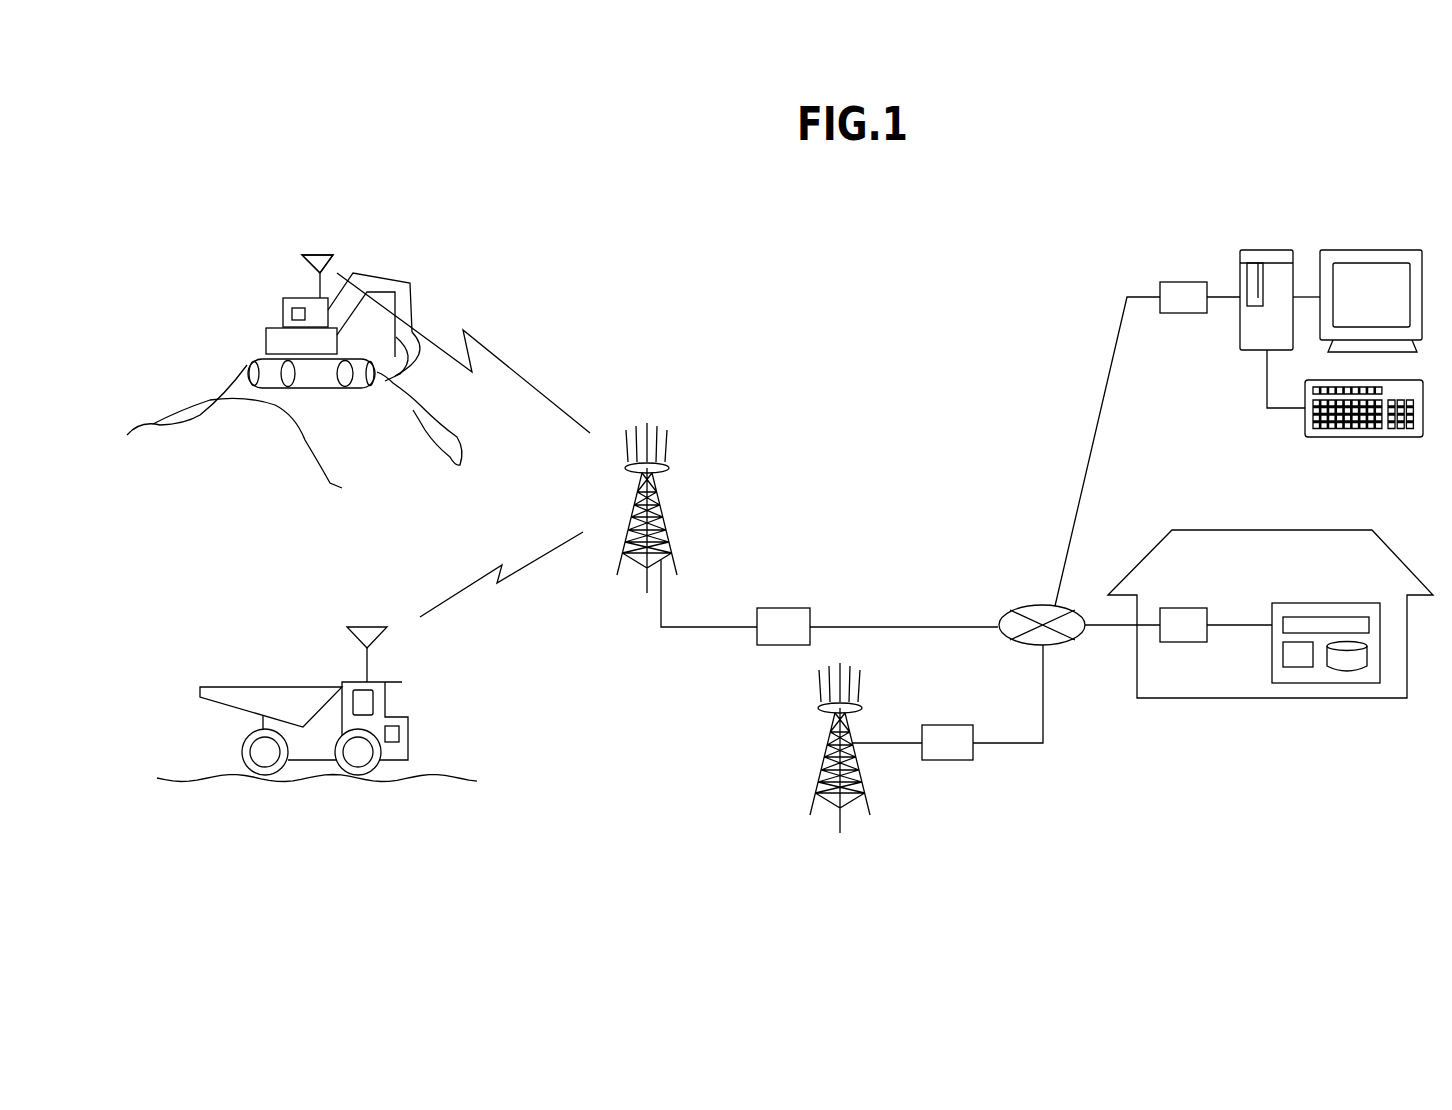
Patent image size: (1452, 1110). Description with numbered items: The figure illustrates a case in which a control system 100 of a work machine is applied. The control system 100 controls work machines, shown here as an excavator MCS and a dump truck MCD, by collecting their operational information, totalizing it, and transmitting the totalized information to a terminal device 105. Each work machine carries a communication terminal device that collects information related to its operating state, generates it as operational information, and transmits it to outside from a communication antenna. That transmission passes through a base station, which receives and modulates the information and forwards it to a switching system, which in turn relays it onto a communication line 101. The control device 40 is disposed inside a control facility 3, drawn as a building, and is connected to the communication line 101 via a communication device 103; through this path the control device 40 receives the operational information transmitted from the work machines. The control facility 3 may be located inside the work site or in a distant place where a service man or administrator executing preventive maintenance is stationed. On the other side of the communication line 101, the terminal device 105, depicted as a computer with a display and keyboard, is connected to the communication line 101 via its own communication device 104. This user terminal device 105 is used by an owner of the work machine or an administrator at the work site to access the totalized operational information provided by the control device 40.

The control system 100 is at (872, 272).
The excavator MCS is at (293, 298).
The dump truck MCD is at (277, 687).
The communication line 101 is at (1017, 608).
The communication device 104 is at (1182, 282).
The terminal device 105 is at (1402, 218).
The control facility 3 is at (1280, 530).
The communication device 103 is at (1182, 608).
The control device 40 is at (1317, 603).